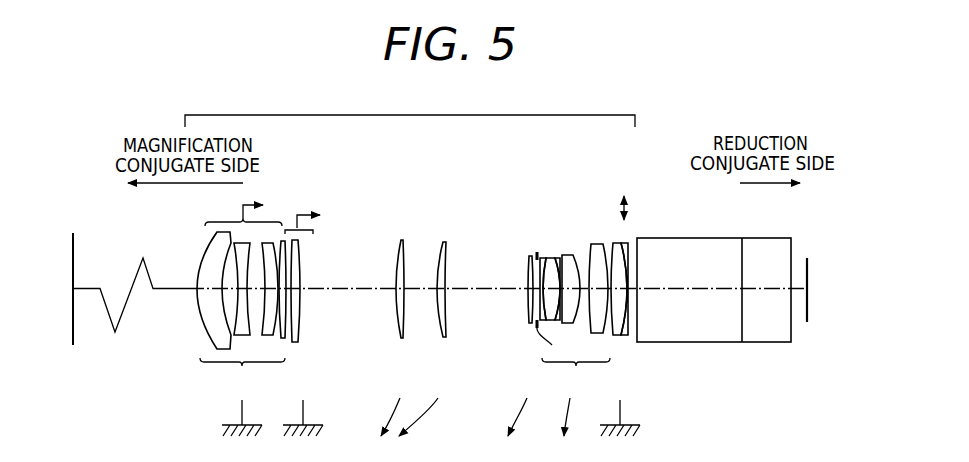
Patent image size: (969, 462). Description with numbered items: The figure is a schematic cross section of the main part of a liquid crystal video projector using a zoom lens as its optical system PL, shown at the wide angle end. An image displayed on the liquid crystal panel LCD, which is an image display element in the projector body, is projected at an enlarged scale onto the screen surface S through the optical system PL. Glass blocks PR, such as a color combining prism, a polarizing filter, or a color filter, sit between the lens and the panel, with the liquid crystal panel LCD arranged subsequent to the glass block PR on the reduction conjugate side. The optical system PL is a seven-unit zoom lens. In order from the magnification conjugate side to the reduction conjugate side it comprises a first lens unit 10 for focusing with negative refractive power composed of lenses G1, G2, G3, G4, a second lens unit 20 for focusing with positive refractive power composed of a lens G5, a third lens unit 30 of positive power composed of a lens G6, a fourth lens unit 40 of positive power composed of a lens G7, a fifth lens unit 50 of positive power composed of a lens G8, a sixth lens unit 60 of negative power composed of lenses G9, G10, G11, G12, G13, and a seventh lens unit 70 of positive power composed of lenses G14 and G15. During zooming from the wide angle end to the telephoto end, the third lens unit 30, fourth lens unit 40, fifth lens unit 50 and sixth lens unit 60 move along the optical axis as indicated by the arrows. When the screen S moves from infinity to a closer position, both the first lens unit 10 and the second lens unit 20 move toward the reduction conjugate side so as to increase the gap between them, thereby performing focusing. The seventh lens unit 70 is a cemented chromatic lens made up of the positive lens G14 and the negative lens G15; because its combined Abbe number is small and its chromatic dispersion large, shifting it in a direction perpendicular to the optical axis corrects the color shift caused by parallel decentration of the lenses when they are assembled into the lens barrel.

The screen surface S is at (77, 238).
The optical system PL is at (410, 109).
The lens G1 is at (205, 247).
The lens G2 is at (238, 243).
The lens G3 is at (270, 243).
The lens G4 is at (290, 270).
The lens G5 is at (305, 248).
The lens G6 is at (402, 240).
The lens G7 is at (443, 242).
The lens G8 is at (528, 260).
The lens G9 is at (546, 258).
The lens G10 is at (552, 258).
The lens G11 is at (556, 258).
The lens G12 is at (565, 255).
The lens G13 is at (593, 244).
The positive lens G14 is at (620, 260).
The negative lens G15 is at (630, 243).
The first lens unit 10 is at (224, 307).
The second lens unit 20 is at (313, 312).
The third lens unit 30 is at (396, 316).
The fourth lens unit 40 is at (426, 316).
The fifth lens unit 50 is at (518, 343).
The sixth lens unit 60 is at (545, 302).
The seventh lens unit 70 is at (655, 310).
The glass block PR is at (720, 335).
The liquid crystal panel LCD is at (808, 322).